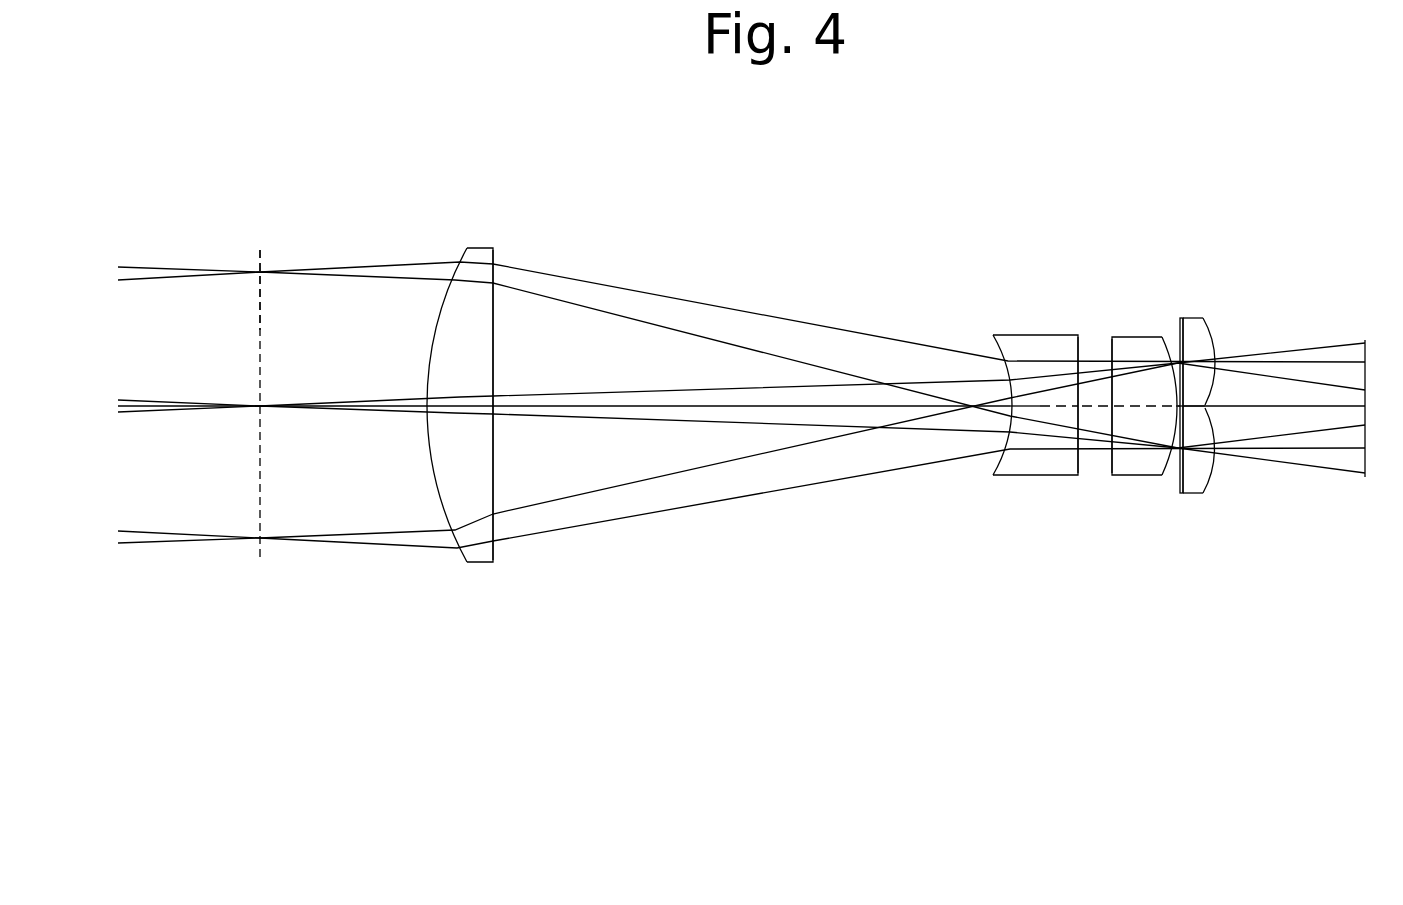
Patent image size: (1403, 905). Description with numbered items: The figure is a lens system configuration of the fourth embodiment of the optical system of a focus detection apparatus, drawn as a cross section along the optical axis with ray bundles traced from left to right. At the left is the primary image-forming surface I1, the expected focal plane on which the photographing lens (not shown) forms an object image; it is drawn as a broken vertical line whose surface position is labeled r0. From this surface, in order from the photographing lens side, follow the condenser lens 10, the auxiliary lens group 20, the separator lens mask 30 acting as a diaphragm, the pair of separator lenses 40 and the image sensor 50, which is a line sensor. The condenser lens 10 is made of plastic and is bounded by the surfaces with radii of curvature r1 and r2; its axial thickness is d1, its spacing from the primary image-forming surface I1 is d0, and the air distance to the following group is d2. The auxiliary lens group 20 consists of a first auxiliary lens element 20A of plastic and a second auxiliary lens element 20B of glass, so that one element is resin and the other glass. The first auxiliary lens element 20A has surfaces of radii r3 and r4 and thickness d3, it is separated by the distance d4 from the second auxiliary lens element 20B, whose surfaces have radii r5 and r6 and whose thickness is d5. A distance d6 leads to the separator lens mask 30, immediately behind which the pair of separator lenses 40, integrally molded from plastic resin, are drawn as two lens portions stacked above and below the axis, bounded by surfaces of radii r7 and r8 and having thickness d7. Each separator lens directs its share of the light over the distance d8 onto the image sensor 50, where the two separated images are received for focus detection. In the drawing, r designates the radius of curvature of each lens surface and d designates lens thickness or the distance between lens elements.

The primary image-forming surface I1 is at (260, 262).
The radius of curvature of lens surface r0 is at (262, 265).
The condenser lens 10 is at (476, 334).
The radius of curvature of lens surface r1 is at (463, 255).
The radius of curvature of lens surface r2 is at (495, 257).
The distance between lens elements d0 is at (388, 408).
The lens thickness d1 is at (469, 408).
The distance between lens elements d2 is at (628, 408).
The auxiliary lens group 20 is at (1045, 307).
The first auxiliary lens element 20A is at (995, 330).
The second auxiliary lens element 20B is at (1132, 330).
The radius of curvature of lens surface r3 is at (1000, 340).
The radius of curvature of lens surface r4 is at (1068, 336).
The radius of curvature of lens surface r5 is at (1098, 336).
The radius of curvature of lens surface r6 is at (1173, 336).
The lens thickness d3 is at (1040, 410).
The distance between lens elements d4 is at (1097, 408).
The lens thickness d5 is at (1137, 410).
The distance between lens elements d6 is at (1172, 410).
The separator lens mask 30 is at (1181, 328).
The pair of separator lenses 40 is at (1230, 322).
The radius of curvature of lens surface r7 is at (1191, 327).
The radius of curvature of lens surface r8 is at (1210, 330).
The lens thickness d7 is at (1197, 410).
The distance between lens elements d8 is at (1272, 408).
The image sensor 50 is at (1367, 340).